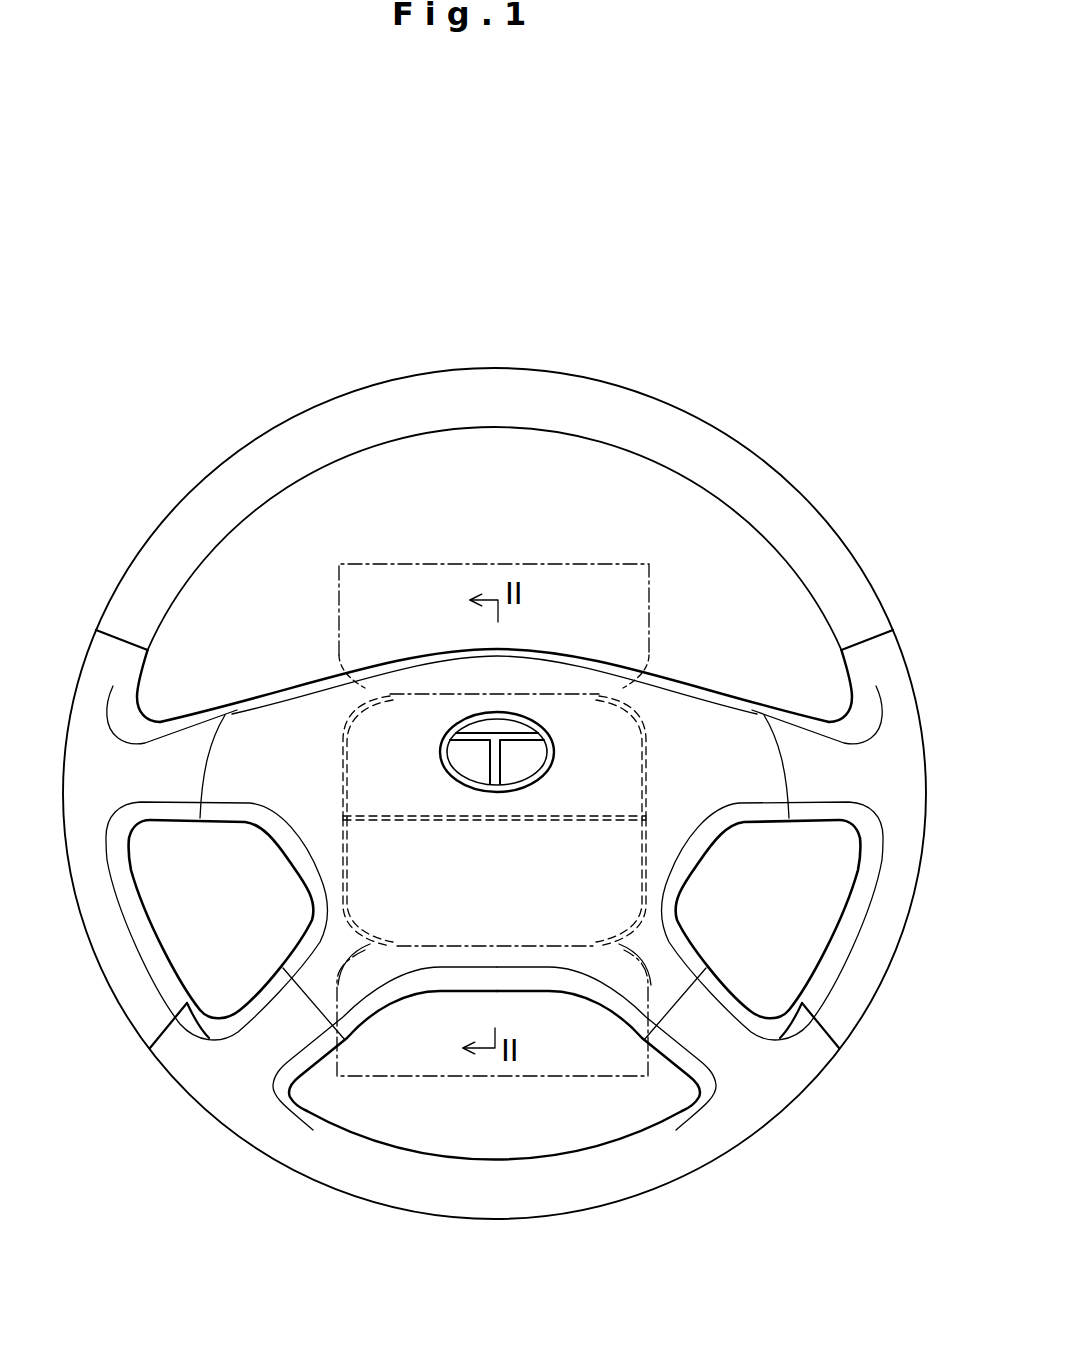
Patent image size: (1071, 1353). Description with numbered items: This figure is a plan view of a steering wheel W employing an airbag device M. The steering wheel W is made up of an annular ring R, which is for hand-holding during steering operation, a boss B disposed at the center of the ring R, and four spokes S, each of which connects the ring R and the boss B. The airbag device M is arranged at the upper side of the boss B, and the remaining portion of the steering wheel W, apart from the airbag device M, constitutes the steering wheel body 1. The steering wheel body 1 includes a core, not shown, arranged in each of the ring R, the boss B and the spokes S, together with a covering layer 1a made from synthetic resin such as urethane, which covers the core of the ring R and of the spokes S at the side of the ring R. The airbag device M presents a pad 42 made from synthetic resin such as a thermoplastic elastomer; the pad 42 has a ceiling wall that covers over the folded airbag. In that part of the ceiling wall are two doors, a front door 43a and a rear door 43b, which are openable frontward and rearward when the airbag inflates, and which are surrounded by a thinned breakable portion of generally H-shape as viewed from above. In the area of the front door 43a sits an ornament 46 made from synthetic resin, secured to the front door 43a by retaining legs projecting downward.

The steering wheel body 1 is at (355, 377).
The covering layer 1a is at (759, 485).
The steering wheel W is at (689, 363).
The ring R is at (826, 517).
The boss B is at (292, 670).
The airbag device M is at (670, 668).
The spokes S is at (172, 826).
The pad 42 is at (737, 702).
The front door 43a is at (541, 580).
The rear door 43b is at (417, 933).
The ornament 46 is at (536, 796).